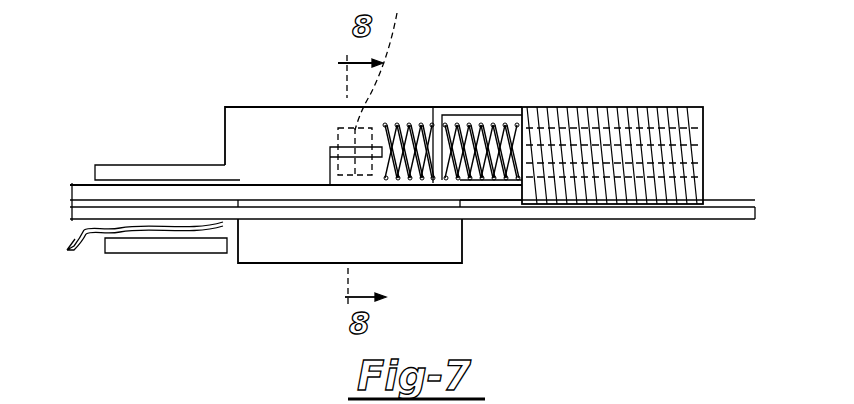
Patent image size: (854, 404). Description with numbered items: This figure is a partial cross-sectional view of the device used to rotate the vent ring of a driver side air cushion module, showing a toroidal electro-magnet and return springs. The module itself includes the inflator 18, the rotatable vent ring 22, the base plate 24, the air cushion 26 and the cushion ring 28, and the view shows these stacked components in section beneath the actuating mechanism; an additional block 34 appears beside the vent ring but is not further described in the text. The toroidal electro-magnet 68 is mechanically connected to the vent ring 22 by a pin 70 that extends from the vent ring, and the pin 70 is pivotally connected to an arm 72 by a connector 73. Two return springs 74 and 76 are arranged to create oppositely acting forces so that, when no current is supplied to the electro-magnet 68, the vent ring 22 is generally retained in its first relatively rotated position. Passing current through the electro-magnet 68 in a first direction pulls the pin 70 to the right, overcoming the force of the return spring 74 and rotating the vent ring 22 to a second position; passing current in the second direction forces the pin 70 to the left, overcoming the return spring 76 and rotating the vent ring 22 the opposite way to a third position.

The inflator 18 is at (290, 248).
The rotatable vent ring 22 is at (73, 184).
The base plate 24 is at (707, 221).
The air cushion 26 is at (93, 257).
The cushion ring 28 is at (157, 250).
The block 34 is at (187, 172).
The toroidal electro-magnet 68 is at (640, 113).
The pin 70 is at (578, 107).
The arm 72 is at (330, 147).
The connector 73 is at (383, 92).
The return spring 74 is at (475, 128).
The return spring 76 is at (400, 125).